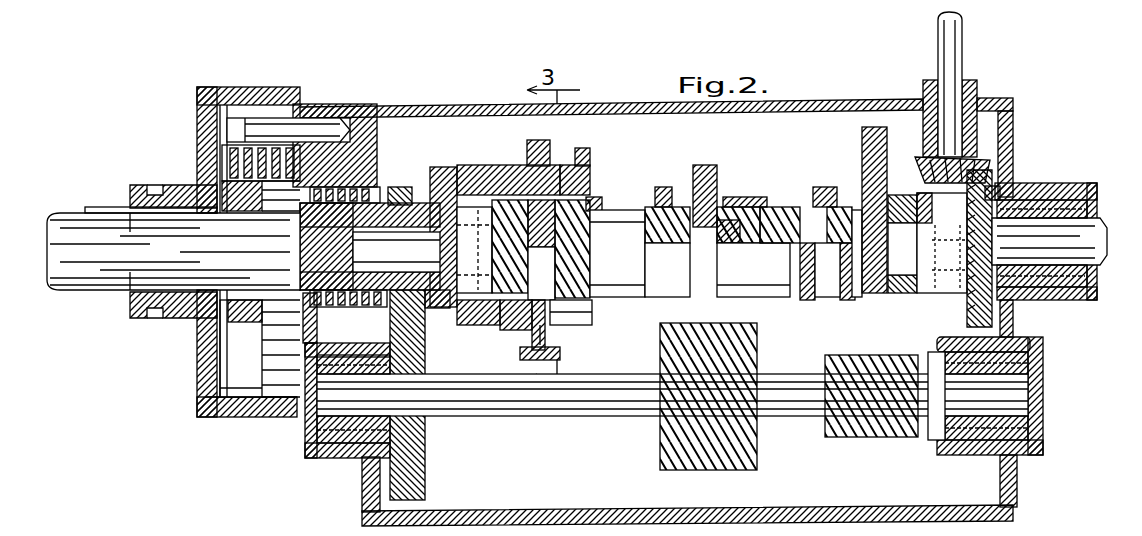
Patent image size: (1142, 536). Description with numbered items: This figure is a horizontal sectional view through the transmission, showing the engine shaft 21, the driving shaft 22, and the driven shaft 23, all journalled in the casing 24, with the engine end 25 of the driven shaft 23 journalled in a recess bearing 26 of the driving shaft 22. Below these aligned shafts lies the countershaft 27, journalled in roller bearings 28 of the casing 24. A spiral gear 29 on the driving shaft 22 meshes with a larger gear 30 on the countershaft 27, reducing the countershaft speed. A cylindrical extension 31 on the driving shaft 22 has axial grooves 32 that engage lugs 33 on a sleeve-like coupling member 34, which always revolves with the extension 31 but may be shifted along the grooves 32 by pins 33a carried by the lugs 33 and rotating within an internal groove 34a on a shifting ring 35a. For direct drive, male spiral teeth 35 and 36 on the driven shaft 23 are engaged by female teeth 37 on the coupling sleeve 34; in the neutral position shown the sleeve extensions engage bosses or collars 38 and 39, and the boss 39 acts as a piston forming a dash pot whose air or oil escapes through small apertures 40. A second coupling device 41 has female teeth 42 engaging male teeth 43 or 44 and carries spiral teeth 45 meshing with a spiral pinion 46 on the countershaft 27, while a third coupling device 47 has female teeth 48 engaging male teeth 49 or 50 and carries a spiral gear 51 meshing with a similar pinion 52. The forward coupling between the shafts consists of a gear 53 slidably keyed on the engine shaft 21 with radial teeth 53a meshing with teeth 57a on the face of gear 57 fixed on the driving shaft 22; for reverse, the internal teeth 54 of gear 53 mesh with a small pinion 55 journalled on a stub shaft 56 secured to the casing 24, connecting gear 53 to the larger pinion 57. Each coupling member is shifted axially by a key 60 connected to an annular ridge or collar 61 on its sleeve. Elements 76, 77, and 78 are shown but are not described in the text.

The engine shaft 21 is at (62, 256).
The driving shaft 22 is at (370, 172).
The driven shaft 23 is at (1053, 255).
The casing 24 is at (478, 99).
The engine end of driven shaft 25 is at (412, 238).
The recess bearing 26 is at (432, 307).
The countershaft 27 is at (510, 404).
The roller bearings 28 is at (305, 438).
The spiral gear 29 is at (401, 187).
The spiral gear 30 is at (420, 450).
The cylindrical extension 31 is at (501, 168).
The axial grooves 32 is at (560, 310).
The lugs 33 is at (548, 330).
The pins 33a is at (540, 345).
The coupling sleeve 34 is at (598, 198).
The internal groove 34a is at (538, 150).
The male spiral teeth 35 is at (567, 245).
The shifting ring 35a is at (580, 150).
The male spiral teeth 36 is at (507, 243).
The female teeth 37 is at (535, 292).
The boss 38 is at (460, 283).
The boss 39 is at (623, 296).
The apertures 40 is at (578, 165).
The coupling device 41 is at (745, 277).
The female teeth 42 is at (720, 202).
The male teeth 43 is at (747, 233).
The male teeth 44 is at (675, 205).
The spiral teeth 45 is at (703, 165).
The spiral pinion 46 is at (683, 445).
The coupling device 47 is at (892, 280).
The female teeth 48 is at (895, 197).
The male teeth 49 is at (917, 234).
The male teeth 50 is at (838, 232).
The spiral gear 51 is at (862, 153).
The spiral pinion 52 is at (847, 437).
The gear 53 is at (205, 103).
The radial teeth 53a is at (213, 320).
The internal teeth 54 is at (253, 417).
The small pinion 55 is at (247, 103).
The stub shaft 56 is at (283, 105).
The gear 57 is at (267, 312).
The radial teeth 57a is at (243, 323).
The key 60 is at (845, 300).
The annular collar 61 is at (827, 297).
The vertical shaft 76 is at (950, 67).
The bevel pinion 77 is at (973, 157).
The bushing 78 is at (994, 188).